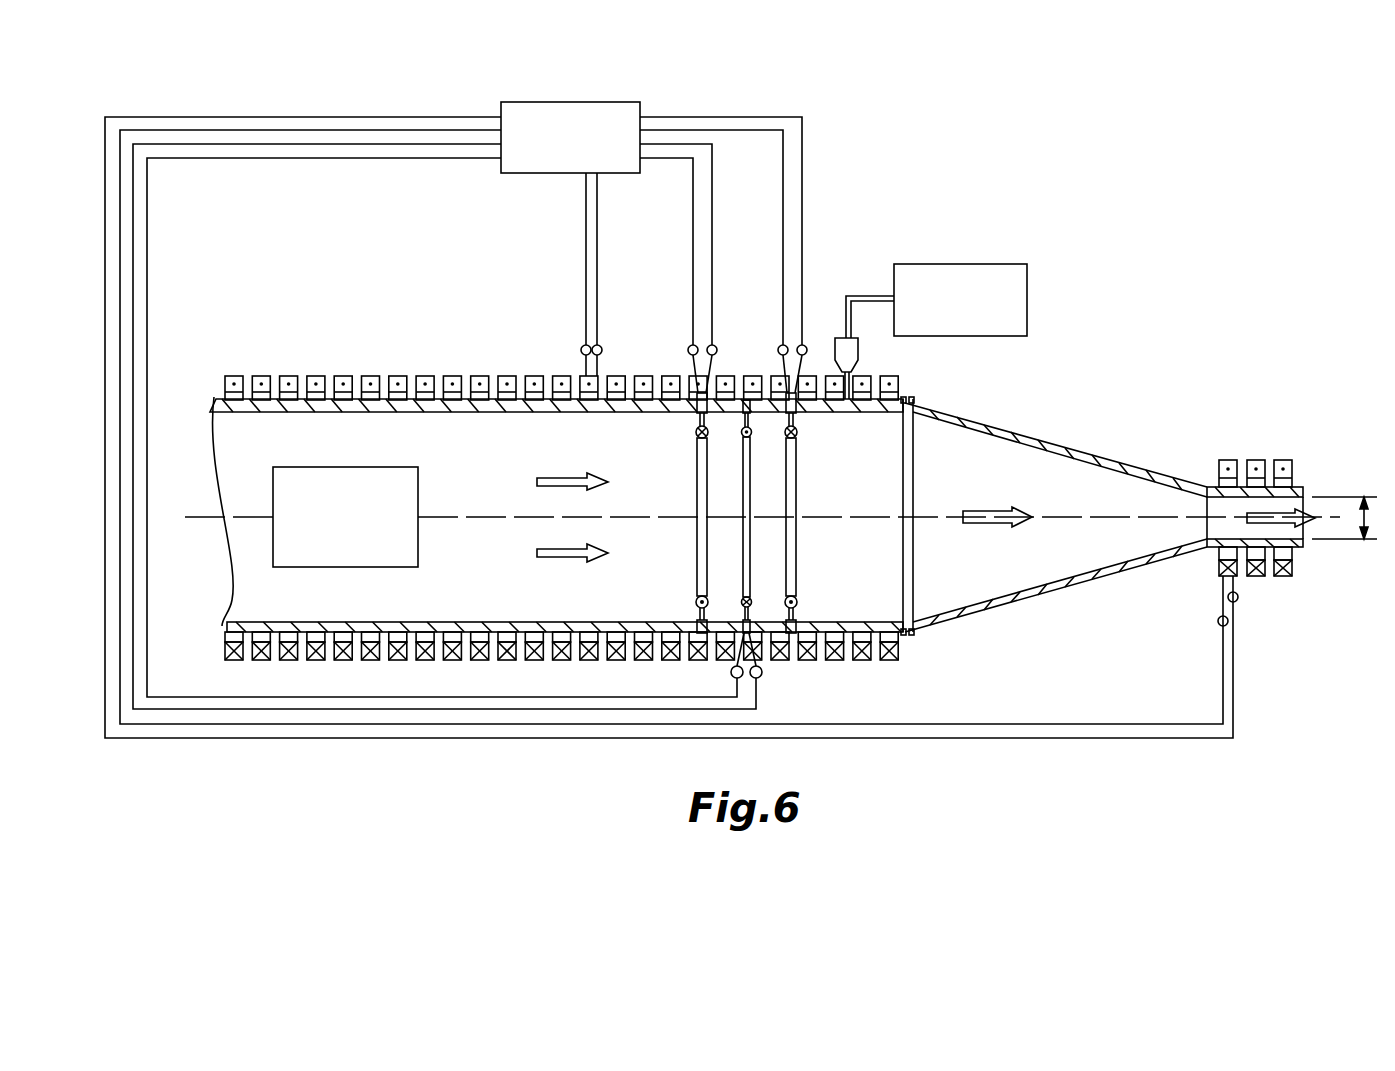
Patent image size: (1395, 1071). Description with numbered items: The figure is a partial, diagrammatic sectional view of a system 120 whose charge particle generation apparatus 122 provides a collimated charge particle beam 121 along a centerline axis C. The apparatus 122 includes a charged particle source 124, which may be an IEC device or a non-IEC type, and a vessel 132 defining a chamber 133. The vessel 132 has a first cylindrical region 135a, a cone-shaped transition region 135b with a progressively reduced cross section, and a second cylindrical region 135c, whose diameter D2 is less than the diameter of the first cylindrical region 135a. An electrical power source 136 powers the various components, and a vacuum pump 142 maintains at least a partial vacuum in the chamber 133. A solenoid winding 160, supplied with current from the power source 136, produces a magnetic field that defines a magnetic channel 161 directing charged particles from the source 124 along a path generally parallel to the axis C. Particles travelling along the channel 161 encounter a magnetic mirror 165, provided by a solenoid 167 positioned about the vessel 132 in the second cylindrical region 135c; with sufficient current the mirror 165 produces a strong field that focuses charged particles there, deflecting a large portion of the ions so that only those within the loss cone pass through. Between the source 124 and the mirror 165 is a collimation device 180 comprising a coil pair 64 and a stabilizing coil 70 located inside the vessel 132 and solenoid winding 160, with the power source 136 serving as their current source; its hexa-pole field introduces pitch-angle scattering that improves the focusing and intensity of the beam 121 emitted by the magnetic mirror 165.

The system 120 is at (1220, 144).
The electrical power source 136 is at (604, 102).
The vacuum pump 142 is at (964, 264).
The first cylindrical region 135a is at (303, 399).
The cone-shaped transition region 135b is at (1065, 443).
The second cylindrical region 135c is at (1241, 485).
The solenoid winding 160 is at (431, 368).
The charge particle generation apparatus 122 is at (941, 640).
The vessel 132 is at (1062, 592).
The charge particle beam 121 is at (1250, 526).
The solenoid 167 is at (1285, 578).
The magnetic mirror 165 is at (1258, 586).
The charged particle source 124 is at (420, 480).
The chamber 133 is at (222, 612).
The magnetic channel 161 is at (565, 478).
The coil pair 64 is at (824, 461).
The collimation device 180 is at (824, 573).
The stabilizing coil 70 is at (743, 527).
The centerline axis C is at (200, 518).
The diameter D2 is at (1364, 497).